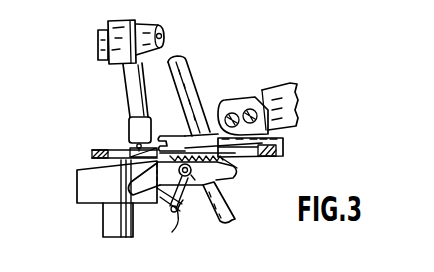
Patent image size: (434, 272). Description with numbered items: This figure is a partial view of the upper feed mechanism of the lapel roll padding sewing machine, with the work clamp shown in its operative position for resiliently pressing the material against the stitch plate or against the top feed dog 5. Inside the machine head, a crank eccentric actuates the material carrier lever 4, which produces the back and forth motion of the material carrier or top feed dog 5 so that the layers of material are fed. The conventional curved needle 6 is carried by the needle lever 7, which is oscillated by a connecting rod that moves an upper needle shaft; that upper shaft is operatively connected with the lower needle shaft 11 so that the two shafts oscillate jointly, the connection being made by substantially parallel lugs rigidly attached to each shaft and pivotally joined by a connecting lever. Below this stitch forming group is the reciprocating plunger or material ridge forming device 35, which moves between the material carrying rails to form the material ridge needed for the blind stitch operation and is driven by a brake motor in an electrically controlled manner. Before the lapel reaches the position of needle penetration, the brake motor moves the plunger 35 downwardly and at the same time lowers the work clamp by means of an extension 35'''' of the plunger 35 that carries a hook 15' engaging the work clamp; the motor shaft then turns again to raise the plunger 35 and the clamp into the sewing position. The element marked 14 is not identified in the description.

The lower needle shaft 11 is at (164, 36).
The curved needle 6 is at (128, 86).
The needle lever 7 is at (129, 140).
The actuating arm 14 is at (182, 136).
The material carrier lever 4 is at (297, 108).
The top feed dog 5 is at (276, 140).
The hook 15' is at (181, 194).
The plunger 35 is at (113, 209).
The extension of the plunger 35'''' is at (174, 227).